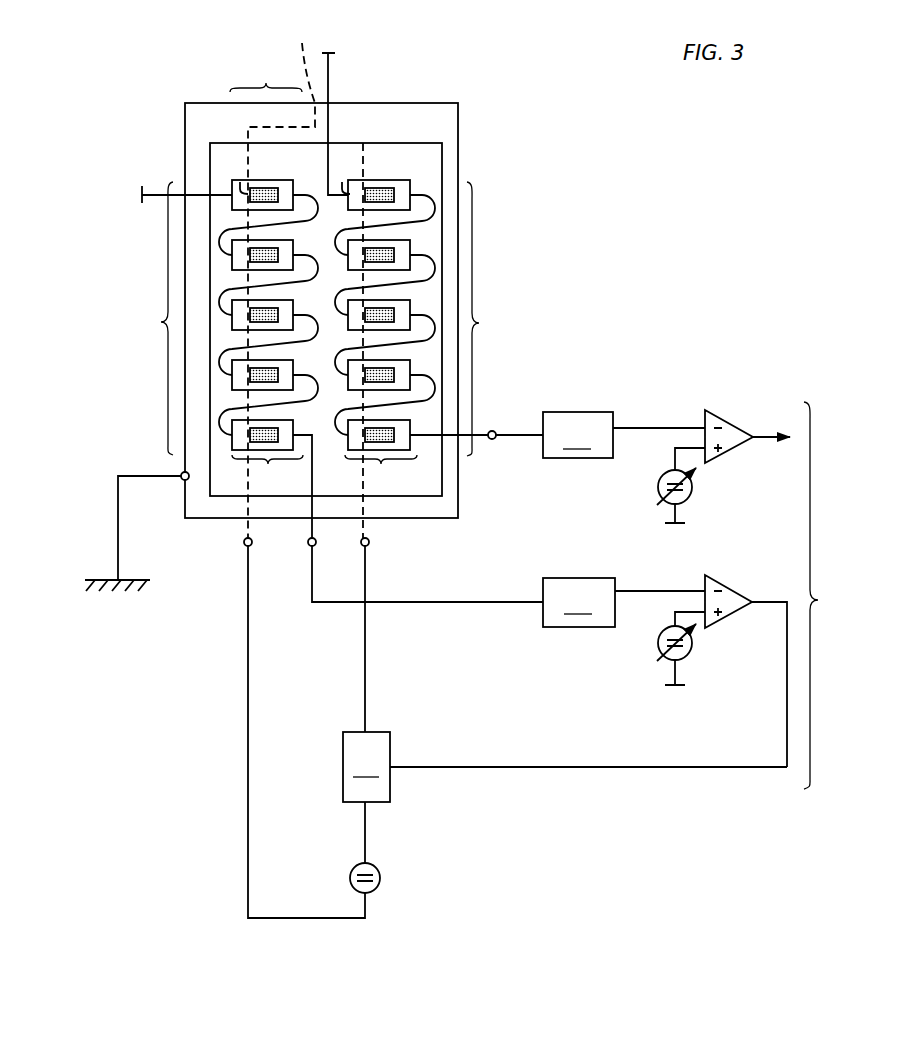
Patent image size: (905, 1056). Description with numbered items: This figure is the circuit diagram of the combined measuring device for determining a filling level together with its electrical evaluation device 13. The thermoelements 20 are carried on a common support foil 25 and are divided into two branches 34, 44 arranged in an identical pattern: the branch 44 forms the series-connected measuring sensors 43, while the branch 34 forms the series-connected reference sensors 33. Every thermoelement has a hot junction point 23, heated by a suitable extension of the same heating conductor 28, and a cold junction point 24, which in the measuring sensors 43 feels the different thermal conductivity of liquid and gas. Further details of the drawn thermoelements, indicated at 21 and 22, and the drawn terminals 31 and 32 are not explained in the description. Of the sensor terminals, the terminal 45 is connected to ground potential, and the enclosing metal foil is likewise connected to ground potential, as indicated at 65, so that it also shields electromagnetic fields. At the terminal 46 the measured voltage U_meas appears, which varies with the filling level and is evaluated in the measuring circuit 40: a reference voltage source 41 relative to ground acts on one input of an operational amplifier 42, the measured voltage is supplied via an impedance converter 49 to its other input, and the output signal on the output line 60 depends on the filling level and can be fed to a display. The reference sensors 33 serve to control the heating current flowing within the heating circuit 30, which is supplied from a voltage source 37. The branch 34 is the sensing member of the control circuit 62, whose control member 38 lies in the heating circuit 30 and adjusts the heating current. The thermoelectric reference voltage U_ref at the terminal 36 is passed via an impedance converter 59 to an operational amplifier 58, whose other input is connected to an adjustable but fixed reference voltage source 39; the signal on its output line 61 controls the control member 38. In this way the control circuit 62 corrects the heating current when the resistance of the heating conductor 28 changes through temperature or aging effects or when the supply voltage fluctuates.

The electrical evaluation device 13 is at (826, 595).
The thermoelements 20 is at (328, 266).
The element housing 21 is at (407, 190).
The resistive heating element 22 is at (378, 193).
The hot junction point 23 is at (240, 185).
The cold junction point 24 is at (277, 193).
The support foil 25 is at (383, 143).
The heating conductor 28 is at (305, 280).
The heating circuit 30 is at (256, 748).
The terminal 31 is at (245, 546).
The terminal 32 is at (370, 545).
The reference sensors 33 is at (268, 301).
The reference sensor branch 34 is at (151, 318).
The reference voltage terminal 36 is at (308, 545).
The voltage source 37 is at (375, 867).
The control member 38 is at (366, 767).
The adjustable reference voltage source 39 is at (662, 648).
The measuring circuit 40 is at (650, 426).
The reference voltage source 41 is at (690, 497).
The operational amplifier 42 is at (726, 432).
The measuring sensors 43 is at (439, 343).
The measuring sensor branch 44 is at (488, 319).
The terminal 45 is at (142, 194).
The measuring terminal 46 is at (493, 431).
The impedance converter 49 is at (578, 435).
The operational amplifier 58 is at (723, 590).
The impedance converter 59 is at (624, 602).
The output line 60 is at (772, 443).
The output line 61 is at (787, 703).
The control circuit 62 is at (568, 772).
The ground connection 65 is at (118, 526).